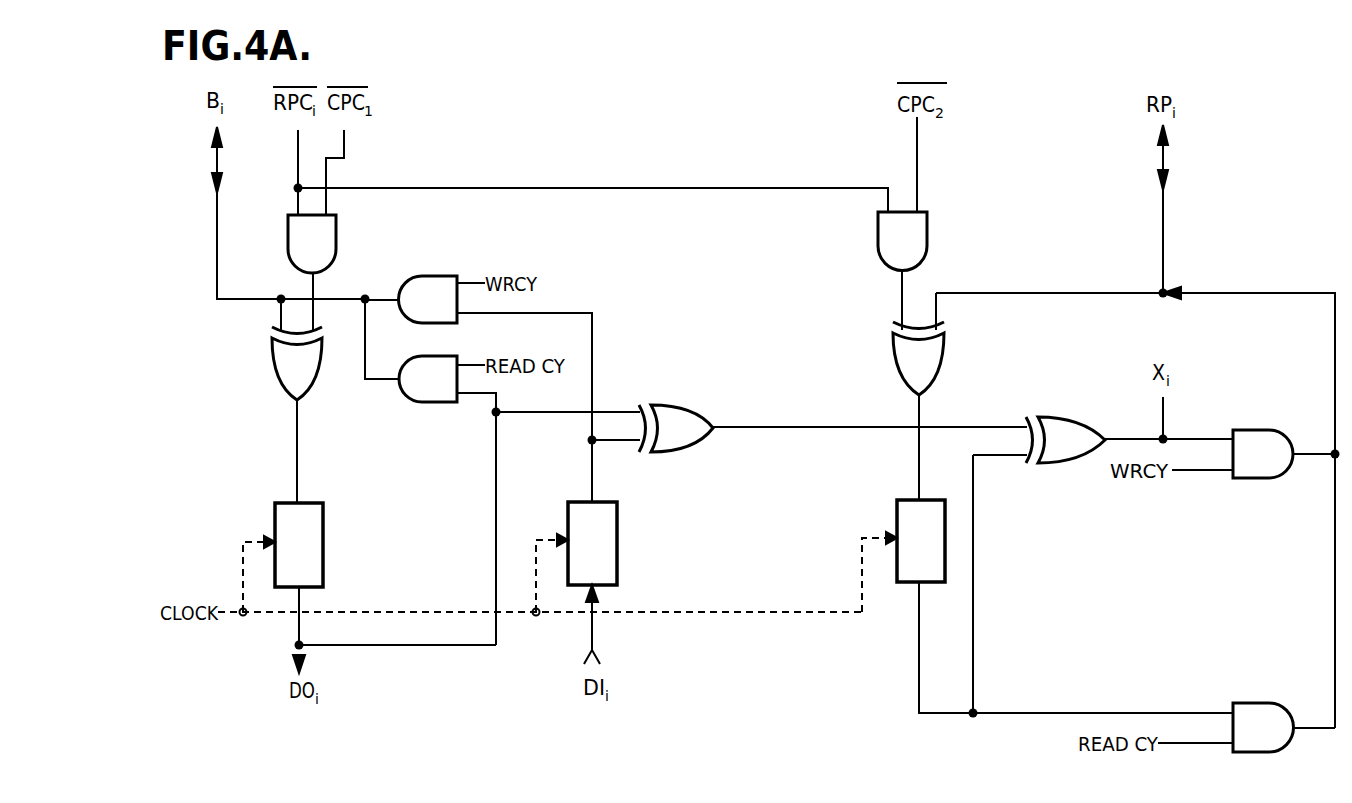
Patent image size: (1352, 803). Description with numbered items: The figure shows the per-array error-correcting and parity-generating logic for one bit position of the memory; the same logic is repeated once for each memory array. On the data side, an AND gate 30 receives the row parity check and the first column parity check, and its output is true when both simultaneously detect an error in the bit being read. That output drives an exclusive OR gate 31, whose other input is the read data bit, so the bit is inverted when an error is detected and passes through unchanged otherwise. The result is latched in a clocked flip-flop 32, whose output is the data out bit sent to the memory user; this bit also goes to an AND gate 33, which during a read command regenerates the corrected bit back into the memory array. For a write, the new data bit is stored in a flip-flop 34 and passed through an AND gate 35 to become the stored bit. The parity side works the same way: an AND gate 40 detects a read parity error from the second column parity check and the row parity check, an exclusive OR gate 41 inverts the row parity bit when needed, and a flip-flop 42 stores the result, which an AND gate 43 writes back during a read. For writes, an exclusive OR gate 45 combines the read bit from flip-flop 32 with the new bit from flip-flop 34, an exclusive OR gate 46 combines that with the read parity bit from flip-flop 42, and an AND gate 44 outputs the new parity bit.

The AND gate 30 is at (300, 257).
The exclusive OR gate 31 is at (286, 377).
The flip-flop 32 is at (323, 503).
The AND gate 33 is at (418, 391).
The flip-flop 34 is at (568, 502).
The AND gate 35 is at (418, 312).
The AND gate 40 is at (890, 254).
The exclusive OR gate 41 is at (908, 371).
The flip-flop 42 is at (897, 500).
The AND gate 43 is at (1246, 740).
The AND gate 44 is at (1246, 466).
The exclusive OR gate 45 is at (663, 440).
The exclusive OR gate 46 is at (1051, 452).